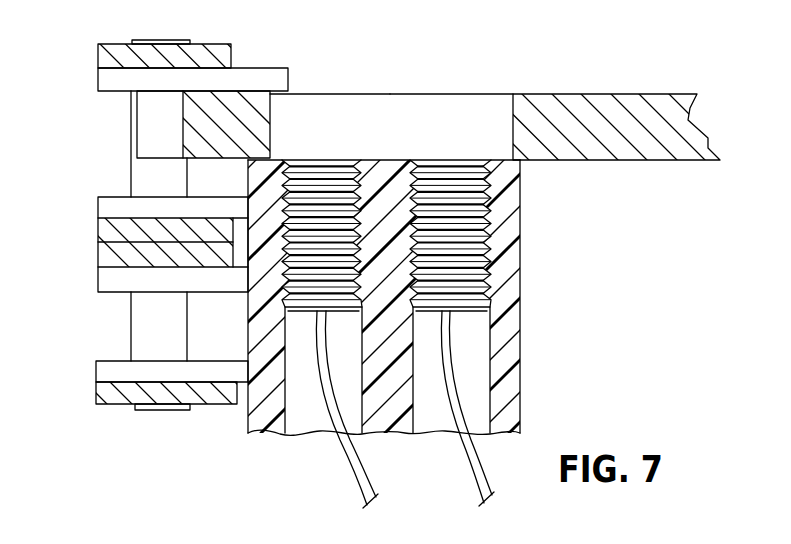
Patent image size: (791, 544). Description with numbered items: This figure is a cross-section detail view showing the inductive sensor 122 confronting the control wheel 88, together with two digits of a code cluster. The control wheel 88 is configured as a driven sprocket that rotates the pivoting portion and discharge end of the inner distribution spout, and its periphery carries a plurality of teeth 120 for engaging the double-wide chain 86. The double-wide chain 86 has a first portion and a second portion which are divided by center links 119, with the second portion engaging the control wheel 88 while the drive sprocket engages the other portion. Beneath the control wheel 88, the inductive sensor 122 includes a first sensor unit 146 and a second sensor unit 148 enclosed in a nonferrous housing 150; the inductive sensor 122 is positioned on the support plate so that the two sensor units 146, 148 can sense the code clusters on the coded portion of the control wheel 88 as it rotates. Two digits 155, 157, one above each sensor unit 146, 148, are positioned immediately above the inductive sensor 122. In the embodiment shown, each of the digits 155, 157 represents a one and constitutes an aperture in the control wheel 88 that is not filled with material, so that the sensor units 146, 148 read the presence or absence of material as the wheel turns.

The double-wide chain 86 is at (108, 402).
The control wheel 88 is at (622, 112).
The center links 119 is at (98, 268).
The teeth 120 is at (150, 122).
The inductive sensor 122 is at (272, 425).
The first sensor unit 146 is at (308, 298).
The second sensor unit 148 is at (428, 298).
The nonferrous housing 150 is at (253, 408).
The digit 155 is at (325, 115).
The digit 157 is at (452, 113).